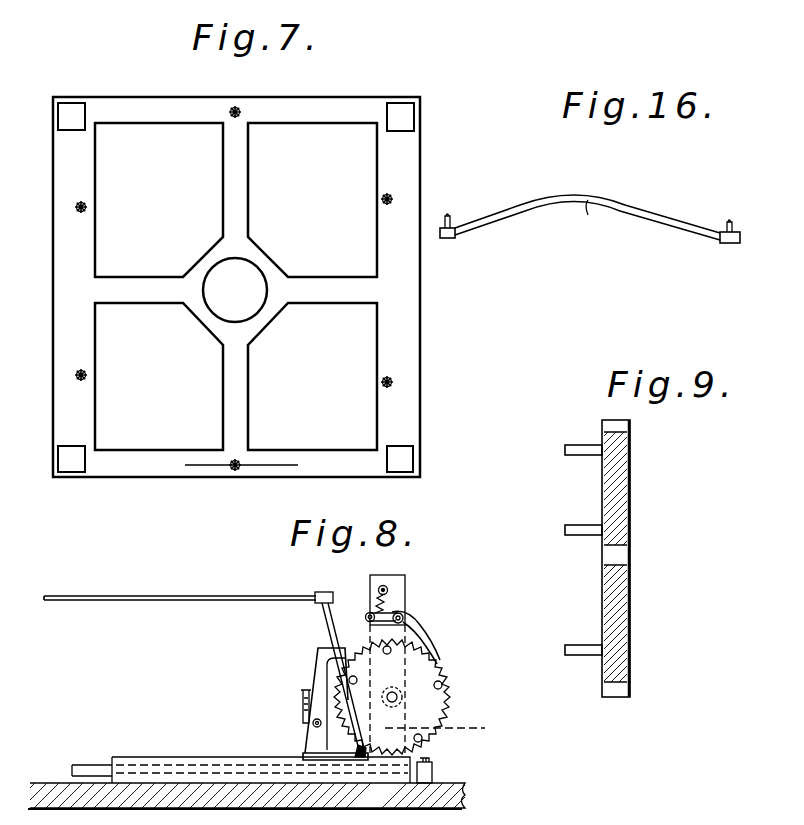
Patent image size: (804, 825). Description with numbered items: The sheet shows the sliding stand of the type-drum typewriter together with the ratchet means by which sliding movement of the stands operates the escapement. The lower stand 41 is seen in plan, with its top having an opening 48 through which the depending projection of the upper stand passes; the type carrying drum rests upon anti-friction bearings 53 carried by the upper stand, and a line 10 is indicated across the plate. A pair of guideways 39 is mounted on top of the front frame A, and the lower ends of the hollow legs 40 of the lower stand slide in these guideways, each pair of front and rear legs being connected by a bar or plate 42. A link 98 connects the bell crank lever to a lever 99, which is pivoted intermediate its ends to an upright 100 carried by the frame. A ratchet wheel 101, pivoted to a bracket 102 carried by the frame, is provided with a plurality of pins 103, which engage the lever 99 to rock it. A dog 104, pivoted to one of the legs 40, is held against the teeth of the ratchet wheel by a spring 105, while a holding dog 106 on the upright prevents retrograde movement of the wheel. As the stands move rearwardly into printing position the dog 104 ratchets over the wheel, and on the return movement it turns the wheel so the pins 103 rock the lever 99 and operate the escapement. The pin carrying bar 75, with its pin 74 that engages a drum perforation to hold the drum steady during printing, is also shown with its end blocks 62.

In FIG. 7, the lower stand 41 is at (140, 478).
In FIG. 7, the opening 48 is at (258, 275).
In FIG. 7, the plate line 10 is at (244, 466).
In FIG. 7, the anti-friction bearings 53 is at (240, 110).
In FIG. 16, the anti-friction bearings 53 is at (445, 185).
In FIG. 16, the bar 75 is at (676, 217).
In FIG. 16, the pin 74 is at (586, 206).
In FIG. 16, the end blocks 62 is at (446, 238).
In FIG. 9, the ratchet wheel 101 is at (632, 617).
In FIG. 8, the ratchet wheel 101 is at (443, 700).
In FIG. 9, the pins 103 is at (562, 525).
In FIG. 8, the pins 103 is at (442, 680).
In FIG. 8, the front frame A is at (470, 783).
In FIG. 8, the guideways 39 is at (200, 750).
In FIG. 8, the bar or plate 42 is at (98, 765).
In FIG. 8, the link 98 is at (228, 601).
In FIG. 8, the lever 99 is at (318, 627).
In FIG. 8, the upright 100 is at (318, 665).
In FIG. 8, the holding dog 106 is at (312, 720).
In FIG. 8, the legs 40 is at (402, 590).
In FIG. 8, the spring 105 is at (372, 585).
In FIG. 8, the dog 104 is at (425, 638).
In FIG. 8, the bracket 102 is at (451, 730).